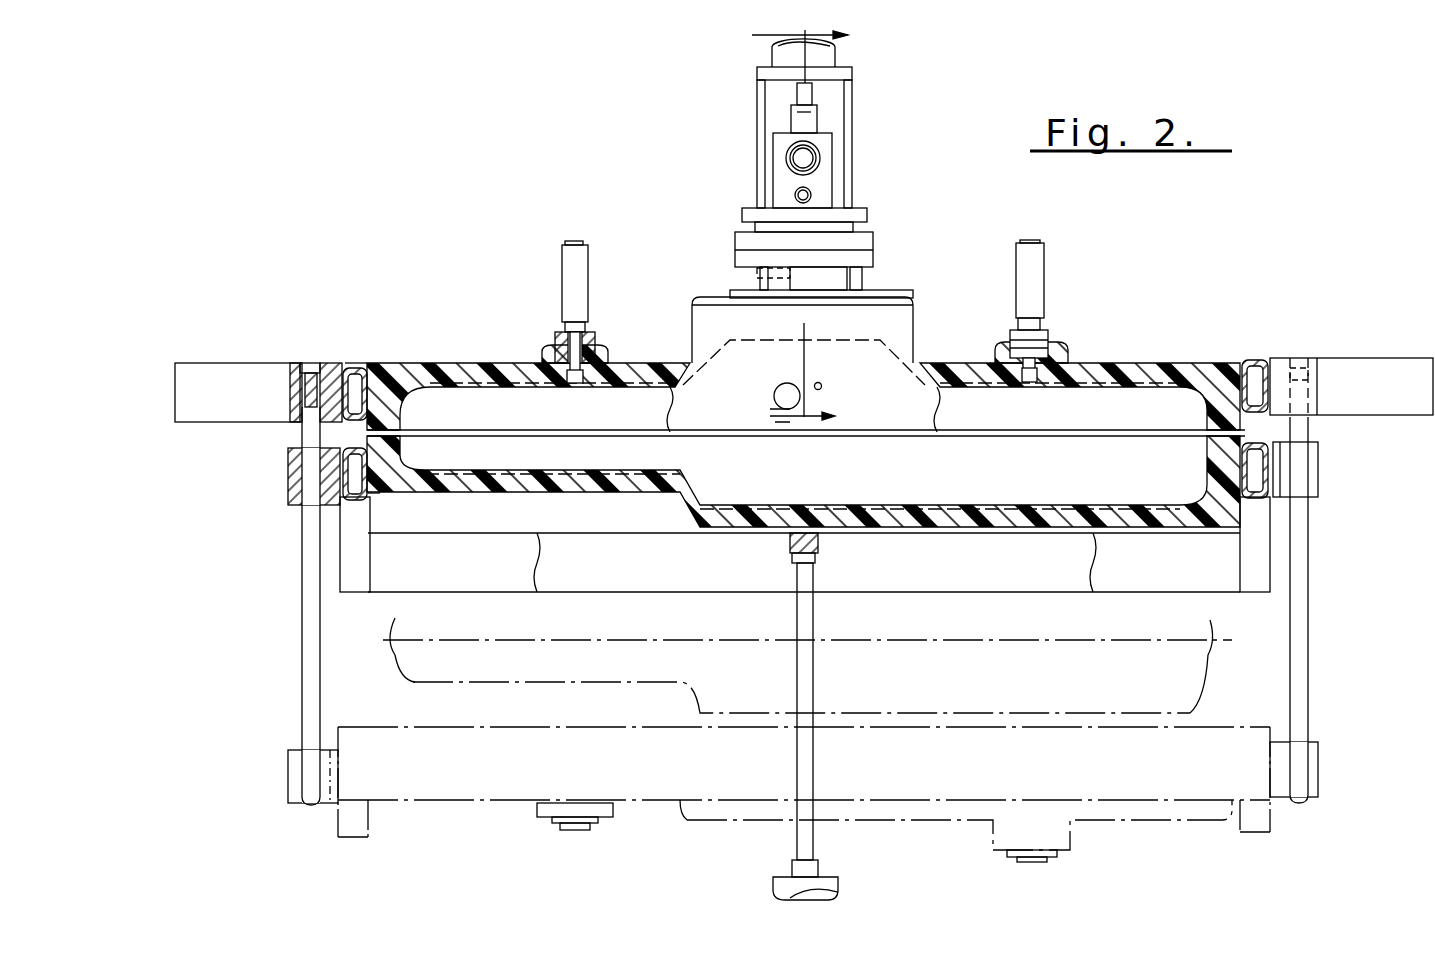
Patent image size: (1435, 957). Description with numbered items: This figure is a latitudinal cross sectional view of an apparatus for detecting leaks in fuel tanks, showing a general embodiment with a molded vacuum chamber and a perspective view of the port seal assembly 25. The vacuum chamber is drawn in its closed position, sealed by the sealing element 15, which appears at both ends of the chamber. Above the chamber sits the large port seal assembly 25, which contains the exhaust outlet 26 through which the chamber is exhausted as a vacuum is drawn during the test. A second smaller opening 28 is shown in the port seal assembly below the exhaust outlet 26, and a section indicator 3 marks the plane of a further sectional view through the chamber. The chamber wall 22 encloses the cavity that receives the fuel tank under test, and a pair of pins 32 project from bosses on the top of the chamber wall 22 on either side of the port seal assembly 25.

The section line 3- 3 is at (820, 228).
The sealing element 15 is at (337, 433).
The housing 22 is at (470, 387).
The port seal assembly 25 is at (833, 152).
The exhaust outlet 26 is at (795, 157).
The bleed port 28 is at (795, 193).
The pin 32 is at (567, 267).